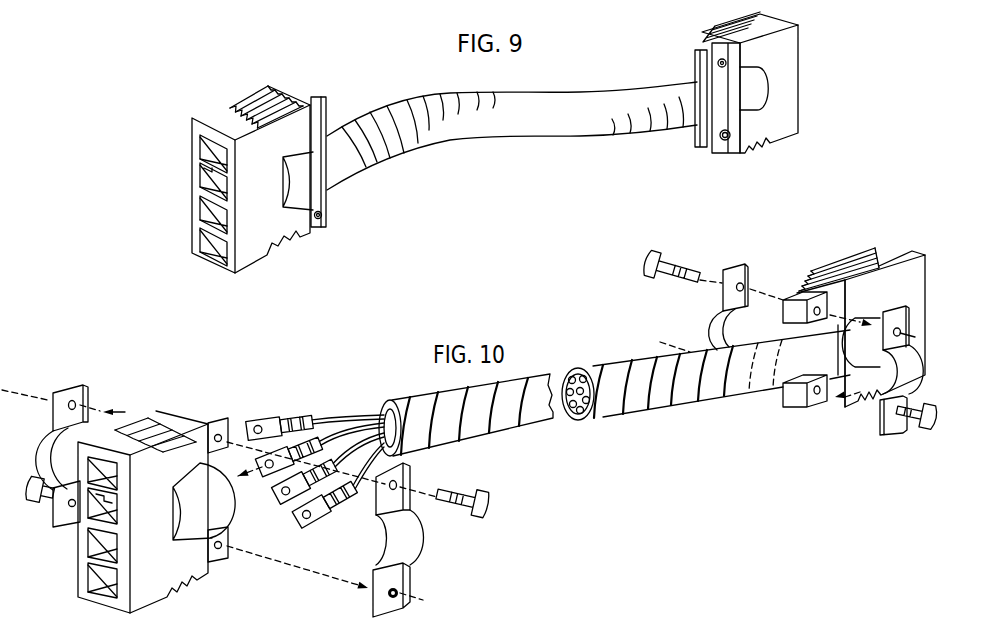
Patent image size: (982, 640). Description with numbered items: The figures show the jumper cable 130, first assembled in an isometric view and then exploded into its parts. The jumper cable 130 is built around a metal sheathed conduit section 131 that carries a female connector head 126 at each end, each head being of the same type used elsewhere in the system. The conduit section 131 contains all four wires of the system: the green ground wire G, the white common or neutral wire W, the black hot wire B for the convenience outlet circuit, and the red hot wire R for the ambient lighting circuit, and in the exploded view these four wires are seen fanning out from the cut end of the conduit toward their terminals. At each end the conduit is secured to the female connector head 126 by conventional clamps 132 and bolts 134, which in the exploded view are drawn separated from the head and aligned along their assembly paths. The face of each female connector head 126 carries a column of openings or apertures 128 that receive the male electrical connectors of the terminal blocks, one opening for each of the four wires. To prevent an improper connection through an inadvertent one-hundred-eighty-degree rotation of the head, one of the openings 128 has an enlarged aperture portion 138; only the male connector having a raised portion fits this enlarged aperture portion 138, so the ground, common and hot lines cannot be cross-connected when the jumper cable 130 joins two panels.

In FIG. 9, the female connector head 126 is at (227, 123).
In FIG. 10, the female connector head 126 is at (110, 437).
In FIG. 9, the openings or apertures 128 is at (187, 195).
In FIG. 10, the openings or apertures 128 is at (108, 548).
In FIG. 9, the jumper cable 130 is at (512, 125).
In FIG. 10, the jumper cable 130 is at (548, 429).
In FIG. 9, the metal sheathed conduit section 131 is at (610, 105).
In FIG. 10, the metal sheathed conduit section 131 is at (609, 373).
In FIG. 10, the clamp 132 is at (388, 605).
In FIG. 10, the bolt 134 is at (463, 512).
In FIG. 9, the enlarged aperture portion 138 is at (202, 168).
In FIG. 9, the white common wire W is at (207, 150).
In FIG. 10, the white common wire W is at (352, 417).
In FIG. 9, the black hot wire B is at (187, 184).
In FIG. 10, the black hot wire B is at (335, 440).
In FIG. 9, the green ground wire G is at (205, 203).
In FIG. 10, the green ground wire G is at (352, 477).
In FIG. 9, the red hot wire R is at (205, 232).
In FIG. 10, the red hot wire R is at (352, 477).